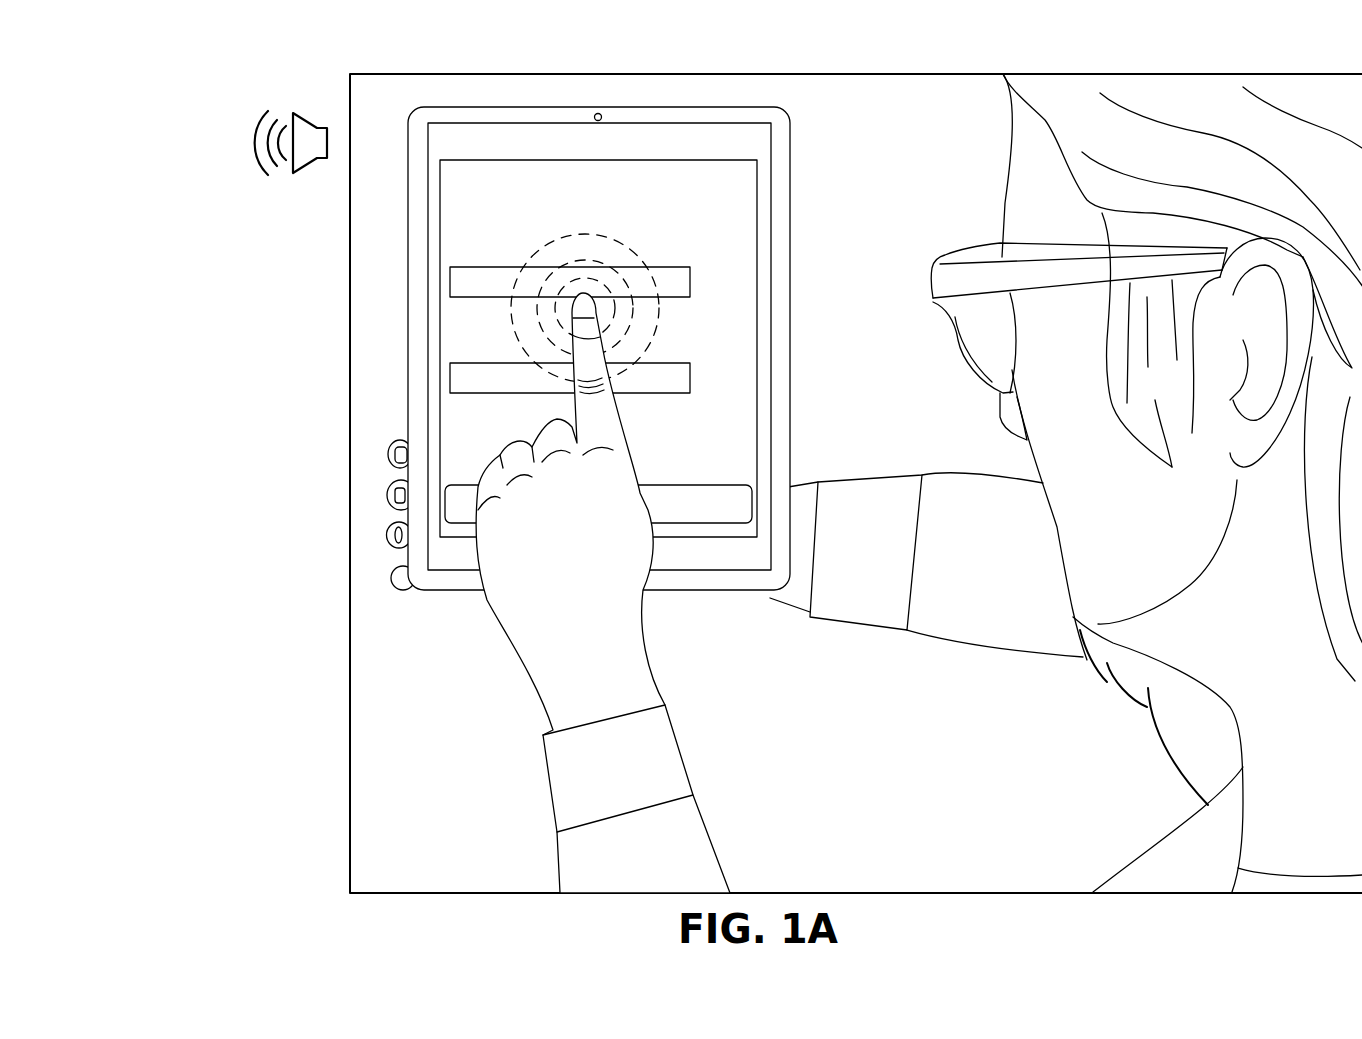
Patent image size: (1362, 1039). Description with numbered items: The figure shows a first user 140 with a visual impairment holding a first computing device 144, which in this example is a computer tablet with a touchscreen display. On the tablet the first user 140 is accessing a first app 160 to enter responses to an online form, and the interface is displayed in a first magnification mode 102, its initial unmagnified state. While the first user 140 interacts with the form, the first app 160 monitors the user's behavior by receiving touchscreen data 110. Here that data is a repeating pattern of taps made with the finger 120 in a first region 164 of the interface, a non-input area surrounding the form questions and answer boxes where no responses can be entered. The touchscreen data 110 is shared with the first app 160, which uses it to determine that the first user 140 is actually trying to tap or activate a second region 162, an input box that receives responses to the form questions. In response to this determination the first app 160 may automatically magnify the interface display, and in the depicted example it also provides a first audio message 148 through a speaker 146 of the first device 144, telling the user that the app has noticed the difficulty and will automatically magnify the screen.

The first magnification mode 102 is at (656, 280).
The touchscreen data 110 is at (495, 314).
The finger 120 is at (588, 554).
The first user 140 is at (1048, 752).
The first computing device 144 is at (577, 307).
The speaker 146 is at (232, 145).
The first audio message 148 is at (193, 367).
The first app 160 is at (703, 190).
The second region 162 is at (687, 283).
The first region 164 is at (655, 317).